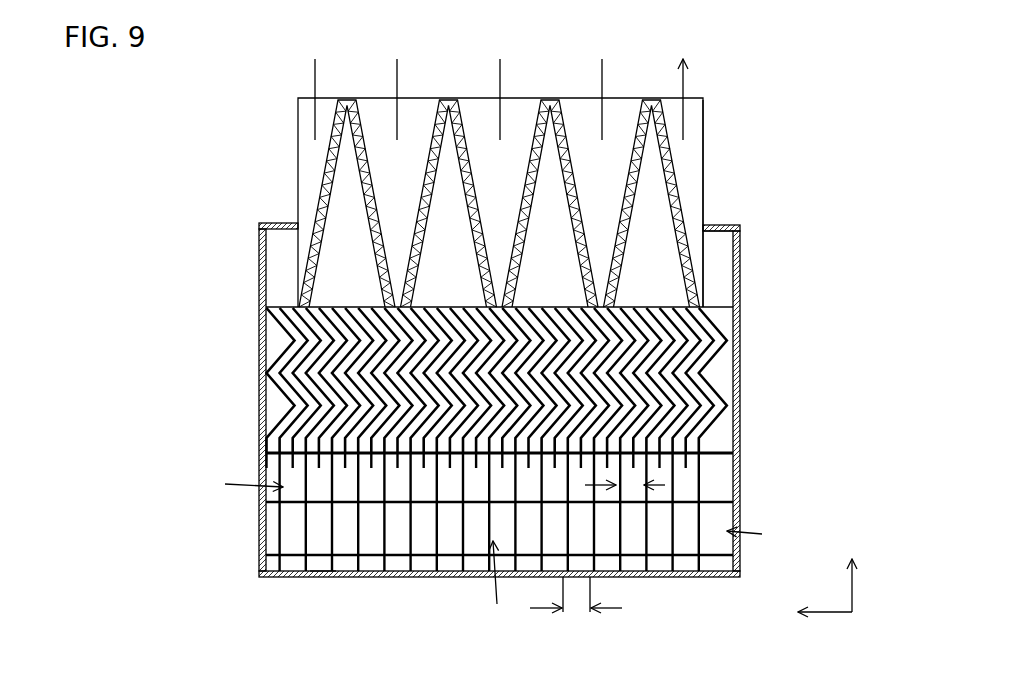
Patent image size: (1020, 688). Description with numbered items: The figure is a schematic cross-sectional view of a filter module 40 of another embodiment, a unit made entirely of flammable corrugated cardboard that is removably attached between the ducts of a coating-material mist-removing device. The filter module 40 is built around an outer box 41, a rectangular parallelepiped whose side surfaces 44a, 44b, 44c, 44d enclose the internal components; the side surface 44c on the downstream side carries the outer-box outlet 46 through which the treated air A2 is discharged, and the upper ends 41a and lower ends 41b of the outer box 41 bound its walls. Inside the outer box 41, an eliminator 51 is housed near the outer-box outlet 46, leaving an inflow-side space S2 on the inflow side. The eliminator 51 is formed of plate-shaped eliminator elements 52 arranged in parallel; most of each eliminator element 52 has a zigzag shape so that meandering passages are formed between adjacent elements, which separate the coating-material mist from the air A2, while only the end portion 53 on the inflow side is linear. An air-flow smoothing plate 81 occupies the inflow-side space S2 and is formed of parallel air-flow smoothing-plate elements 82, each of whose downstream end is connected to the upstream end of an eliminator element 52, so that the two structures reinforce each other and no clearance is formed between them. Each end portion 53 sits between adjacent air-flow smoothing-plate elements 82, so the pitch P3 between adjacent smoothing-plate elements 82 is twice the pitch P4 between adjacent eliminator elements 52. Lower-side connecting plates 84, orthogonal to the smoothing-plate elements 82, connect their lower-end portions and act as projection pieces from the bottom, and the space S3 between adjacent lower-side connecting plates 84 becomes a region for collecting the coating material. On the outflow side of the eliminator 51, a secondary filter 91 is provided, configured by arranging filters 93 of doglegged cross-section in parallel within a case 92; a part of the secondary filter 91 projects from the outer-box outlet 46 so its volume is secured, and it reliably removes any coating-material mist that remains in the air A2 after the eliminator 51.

The filter module 40 is at (218, 150).
The outer box 41 is at (259, 273).
The upper end of side wall 41a is at (724, 230).
The lower end of case 41b is at (322, 568).
The side surface 44a is at (441, 579).
The side surface 44b is at (742, 435).
The side surface 44c is at (727, 224).
The side surface 44d is at (258, 409).
The outer-box outlet 46 is at (298, 210).
The eliminator 51 is at (281, 347).
The eliminator element 52 is at (680, 358).
The end portion 53 is at (447, 470).
The air-flow smoothing plate 81 is at (277, 528).
The air-flow smoothing-plate element 82 is at (383, 572).
The lower-side connecting plate 84 is at (690, 556).
The secondary filter 91 is at (704, 118).
The case 92 is at (704, 160).
The filter 93 is at (415, 221).
The air A2 is at (376, 110).
The inflow-side space S2 is at (500, 587).
The space S3 is at (492, 509).
The pitch P3 is at (577, 608).
The pitch P4 is at (622, 488).